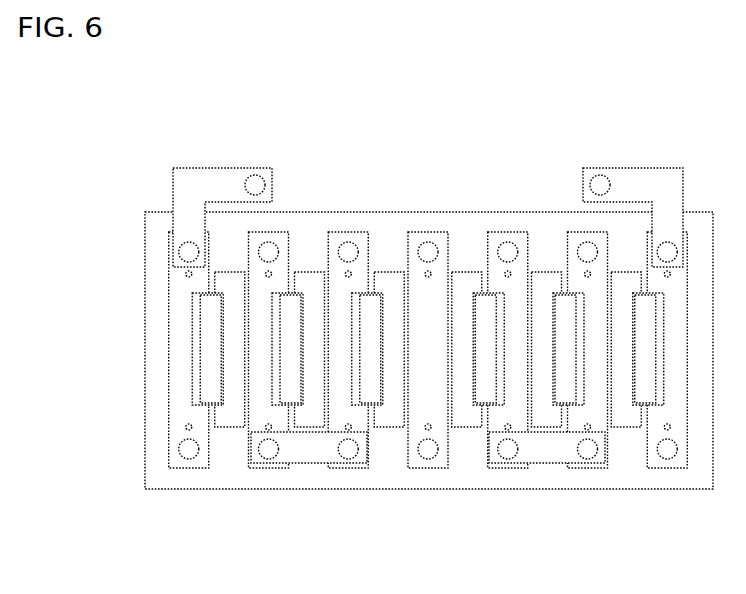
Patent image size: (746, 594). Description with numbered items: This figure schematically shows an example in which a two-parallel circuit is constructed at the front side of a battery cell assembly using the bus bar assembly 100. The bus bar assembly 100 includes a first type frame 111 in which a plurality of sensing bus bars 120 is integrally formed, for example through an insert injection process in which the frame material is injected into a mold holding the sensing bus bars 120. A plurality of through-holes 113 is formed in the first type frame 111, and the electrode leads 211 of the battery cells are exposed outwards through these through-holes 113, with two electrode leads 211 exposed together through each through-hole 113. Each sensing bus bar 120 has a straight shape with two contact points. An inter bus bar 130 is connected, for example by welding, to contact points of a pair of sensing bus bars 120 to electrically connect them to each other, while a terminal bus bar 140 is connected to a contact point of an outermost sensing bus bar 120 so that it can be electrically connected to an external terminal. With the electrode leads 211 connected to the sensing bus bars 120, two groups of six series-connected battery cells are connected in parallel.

The bus bar assembly 100 is at (163, 142).
The first type frame 111 is at (158, 472).
The through-hole 113 is at (391, 297).
The sensing bus bar 120 is at (435, 468).
The inter bus bar 130 is at (308, 450).
The terminal bus bar 140 is at (212, 190).
The electrode lead 211 is at (647, 362).